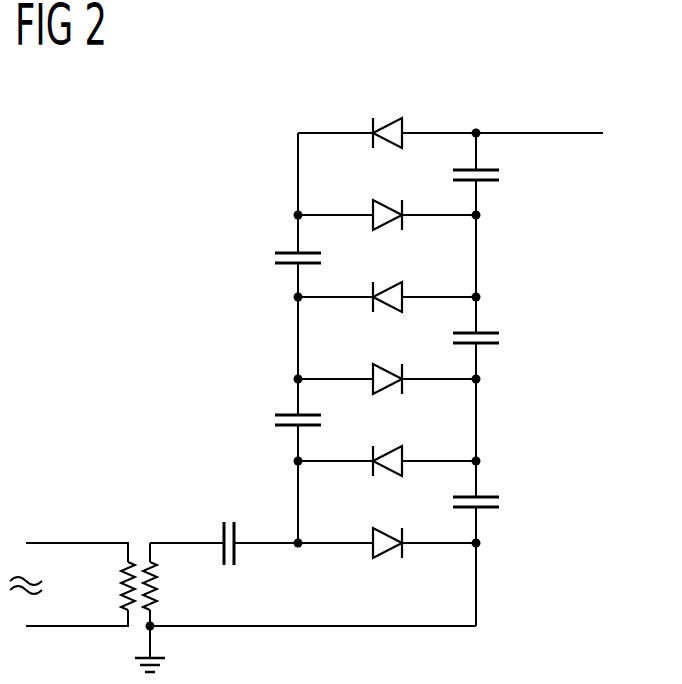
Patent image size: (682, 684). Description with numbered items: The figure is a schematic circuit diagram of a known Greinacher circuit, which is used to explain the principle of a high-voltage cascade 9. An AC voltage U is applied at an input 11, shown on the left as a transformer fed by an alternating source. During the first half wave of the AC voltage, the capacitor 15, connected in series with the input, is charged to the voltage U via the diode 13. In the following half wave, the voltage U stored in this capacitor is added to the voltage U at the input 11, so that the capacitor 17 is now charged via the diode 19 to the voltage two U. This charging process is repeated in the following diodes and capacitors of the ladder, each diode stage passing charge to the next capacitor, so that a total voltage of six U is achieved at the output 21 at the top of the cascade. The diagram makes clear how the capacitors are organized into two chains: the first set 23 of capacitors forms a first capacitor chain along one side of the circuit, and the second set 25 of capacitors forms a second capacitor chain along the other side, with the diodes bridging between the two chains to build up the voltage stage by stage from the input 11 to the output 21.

The high-voltage cascade 9 is at (558, 82).
The input 11 is at (140, 553).
The diode 13 is at (390, 558).
The capacitor 15 is at (231, 520).
The capacitor 17 is at (492, 501).
The diode 19 is at (402, 450).
The output 21 is at (560, 136).
The first set of capacitors 23 is at (296, 340).
The second set of capacitors 25 is at (478, 250).